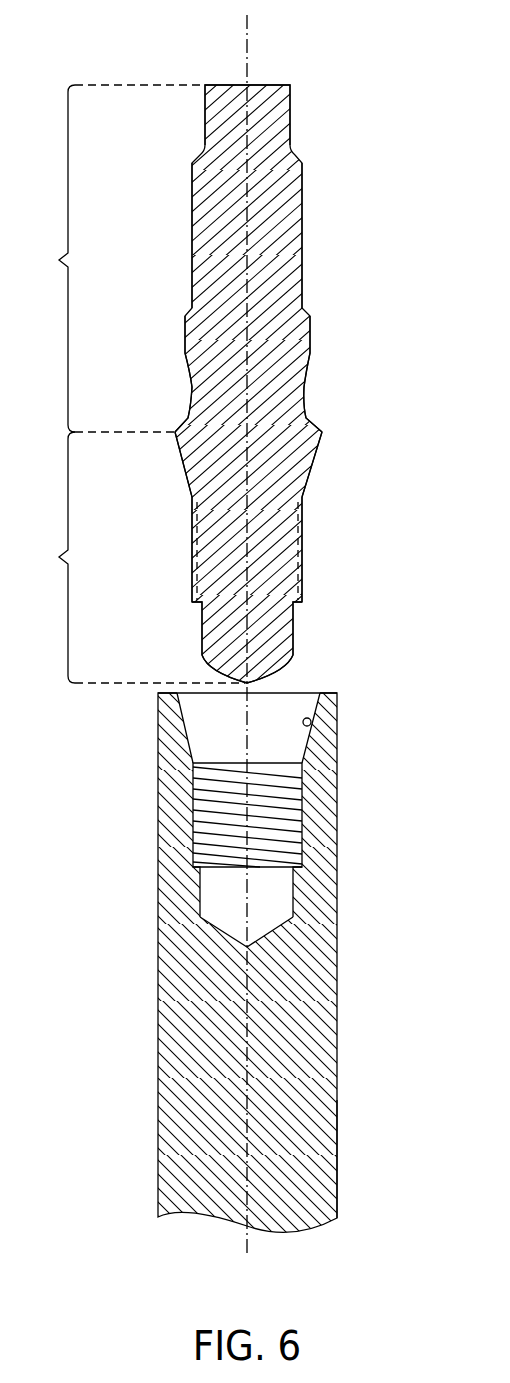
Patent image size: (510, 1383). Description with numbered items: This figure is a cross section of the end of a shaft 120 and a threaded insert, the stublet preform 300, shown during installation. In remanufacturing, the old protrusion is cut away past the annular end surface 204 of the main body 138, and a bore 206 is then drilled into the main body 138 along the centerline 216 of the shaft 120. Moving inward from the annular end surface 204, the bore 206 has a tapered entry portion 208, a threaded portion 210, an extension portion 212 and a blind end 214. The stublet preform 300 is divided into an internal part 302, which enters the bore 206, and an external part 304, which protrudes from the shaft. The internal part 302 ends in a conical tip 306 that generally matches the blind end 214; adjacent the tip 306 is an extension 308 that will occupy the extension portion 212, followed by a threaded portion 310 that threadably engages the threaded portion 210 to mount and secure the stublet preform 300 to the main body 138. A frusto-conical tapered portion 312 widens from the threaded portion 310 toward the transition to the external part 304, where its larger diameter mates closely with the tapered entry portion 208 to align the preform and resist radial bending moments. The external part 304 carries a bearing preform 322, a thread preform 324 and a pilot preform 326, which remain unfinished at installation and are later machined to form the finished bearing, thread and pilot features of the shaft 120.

The stublet preform 300 is at (226, 62).
The internal part 302 is at (131, 557).
The external part 304 is at (111, 258).
The tip 306 is at (214, 669).
The extension 308 is at (293, 628).
The threaded portion 310 is at (302, 572).
The tapered portion 312 is at (312, 463).
The bearing preform 322 is at (185, 348).
The thread preform 324 is at (302, 226).
The pilot preform 326 is at (205, 108).
The shaft 120 is at (158, 1078).
The main body 138 is at (318, 1177).
The annular end surface 204 is at (334, 692).
The bore 206 is at (286, 692).
The tapered entry portion 208 is at (311, 725).
The threaded portion 210 is at (303, 827).
The extension portion 212 is at (294, 900).
The blind end 214 is at (255, 944).
The centerline 216 is at (250, 1243).